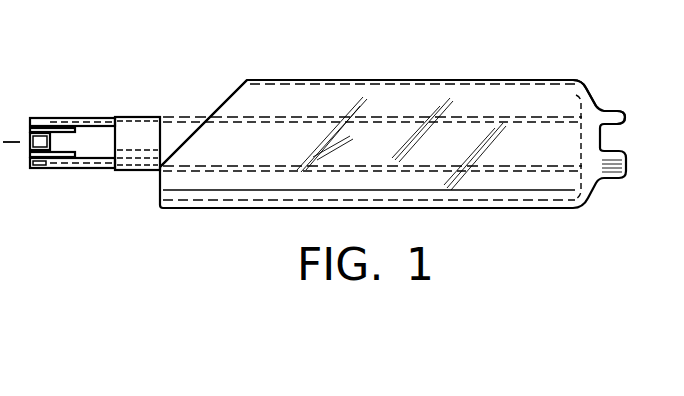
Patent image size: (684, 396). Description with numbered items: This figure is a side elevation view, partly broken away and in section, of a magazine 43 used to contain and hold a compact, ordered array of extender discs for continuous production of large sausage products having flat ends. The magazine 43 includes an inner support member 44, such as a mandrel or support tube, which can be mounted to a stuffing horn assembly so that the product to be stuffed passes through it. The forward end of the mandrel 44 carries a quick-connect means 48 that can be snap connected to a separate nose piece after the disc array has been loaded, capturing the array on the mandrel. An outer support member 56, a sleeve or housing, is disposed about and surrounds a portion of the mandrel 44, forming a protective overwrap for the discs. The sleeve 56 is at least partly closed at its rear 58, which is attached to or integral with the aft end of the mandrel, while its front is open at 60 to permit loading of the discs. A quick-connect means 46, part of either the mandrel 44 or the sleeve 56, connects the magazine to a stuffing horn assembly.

The magazine 43 is at (366, 72).
The inner support member 44 is at (163, 120).
The quick-connect means 46 is at (623, 112).
The quick-connect means 48 is at (63, 100).
The outer support member 56 is at (422, 81).
The rear of the sleeve 58 is at (584, 81).
The open front of the sleeve 60 is at (229, 96).